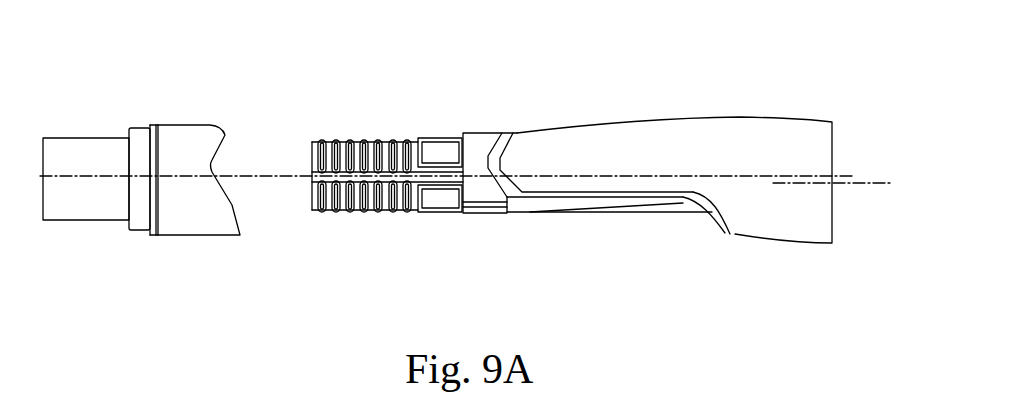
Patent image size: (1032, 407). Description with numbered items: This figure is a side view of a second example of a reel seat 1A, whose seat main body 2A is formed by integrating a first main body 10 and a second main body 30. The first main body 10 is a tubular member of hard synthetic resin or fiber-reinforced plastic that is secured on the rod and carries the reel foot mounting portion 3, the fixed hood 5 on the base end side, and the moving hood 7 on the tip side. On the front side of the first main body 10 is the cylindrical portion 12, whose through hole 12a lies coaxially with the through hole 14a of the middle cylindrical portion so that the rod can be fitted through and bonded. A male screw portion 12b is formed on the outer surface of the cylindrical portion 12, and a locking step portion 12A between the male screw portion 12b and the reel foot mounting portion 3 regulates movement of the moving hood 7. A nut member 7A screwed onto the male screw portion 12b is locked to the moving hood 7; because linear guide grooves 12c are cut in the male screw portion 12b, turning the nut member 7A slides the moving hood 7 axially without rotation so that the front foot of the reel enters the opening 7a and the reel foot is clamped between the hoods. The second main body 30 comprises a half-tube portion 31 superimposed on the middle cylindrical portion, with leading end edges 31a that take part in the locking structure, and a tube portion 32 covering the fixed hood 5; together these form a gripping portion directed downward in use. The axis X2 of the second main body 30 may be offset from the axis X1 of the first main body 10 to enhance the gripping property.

The reel seat 1A is at (637, 67).
The seat main body 2A is at (671, 165).
The reel foot mounting portion 3 is at (573, 214).
The fixed hood 5 is at (711, 215).
The moving hood 7 is at (207, 158).
The nut member 7A is at (70, 147).
The opening of the moving hood 7a is at (240, 216).
The first main body 10 is at (390, 167).
The cylindrical portion 12 is at (435, 205).
The through hole of the cylindrical portion 12a is at (313, 200).
The male screw portion 12b is at (377, 205).
The guide groove 12c is at (313, 168).
The locking step portion 12A is at (485, 134).
The through hole 14a is at (590, 127).
The leading end edge 31a is at (505, 132).
The second main body 30 is at (764, 113).
The half-tube portion 31 is at (590, 127).
The tube portion 32 is at (806, 132).
The axis of the first main body X1 is at (458, 174).
The axis of the second main body X2 is at (845, 187).